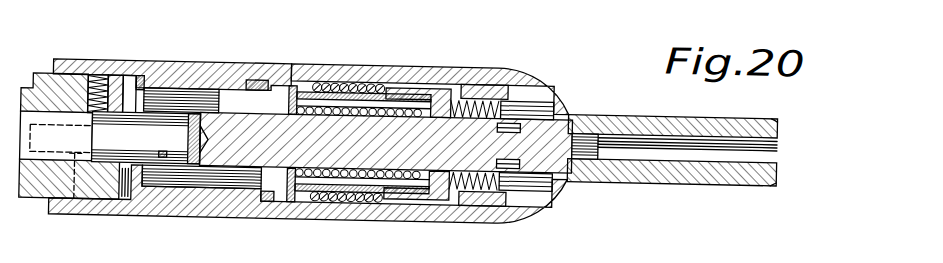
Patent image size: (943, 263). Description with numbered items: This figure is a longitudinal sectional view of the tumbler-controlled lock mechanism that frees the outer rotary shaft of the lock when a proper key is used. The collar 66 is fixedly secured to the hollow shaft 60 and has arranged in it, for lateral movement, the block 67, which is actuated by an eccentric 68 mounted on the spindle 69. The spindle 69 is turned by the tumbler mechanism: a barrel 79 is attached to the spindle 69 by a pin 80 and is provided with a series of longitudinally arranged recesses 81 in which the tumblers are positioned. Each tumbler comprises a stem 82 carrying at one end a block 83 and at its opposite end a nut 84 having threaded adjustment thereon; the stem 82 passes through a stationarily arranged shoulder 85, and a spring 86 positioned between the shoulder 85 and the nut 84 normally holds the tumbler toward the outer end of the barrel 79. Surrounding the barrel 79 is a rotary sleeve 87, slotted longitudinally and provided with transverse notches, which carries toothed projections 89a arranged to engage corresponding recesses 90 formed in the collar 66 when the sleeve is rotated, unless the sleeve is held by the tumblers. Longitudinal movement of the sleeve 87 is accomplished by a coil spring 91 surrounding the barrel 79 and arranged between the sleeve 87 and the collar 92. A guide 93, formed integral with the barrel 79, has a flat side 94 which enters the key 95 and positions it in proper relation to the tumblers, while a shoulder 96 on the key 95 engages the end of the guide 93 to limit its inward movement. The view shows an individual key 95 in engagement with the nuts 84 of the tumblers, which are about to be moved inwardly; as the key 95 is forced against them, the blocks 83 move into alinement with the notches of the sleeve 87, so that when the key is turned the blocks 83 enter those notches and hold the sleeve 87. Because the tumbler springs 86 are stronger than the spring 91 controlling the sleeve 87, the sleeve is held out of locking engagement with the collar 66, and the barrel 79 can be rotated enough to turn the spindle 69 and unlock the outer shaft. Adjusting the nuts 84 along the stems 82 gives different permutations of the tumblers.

The hollow shaft 60 is at (273, 79).
The collar 66 is at (52, 192).
The block 67 is at (56, 135).
The eccentric 68 is at (77, 208).
The spindle 69 is at (146, 138).
The barrel 79 is at (220, 94).
The pin 80 is at (163, 157).
The recesses 81 is at (237, 104).
The stem 82 is at (403, 98).
The block 83 is at (291, 90).
The nut 84 is at (450, 107).
The shoulder 85 is at (302, 88).
The spring 86 is at (368, 82).
The rotary sleeve 87 is at (165, 83).
The toothed projections 89a is at (144, 81).
The recesses 90 is at (128, 83).
The coil spring 91 is at (352, 77).
The collar 92 is at (395, 181).
The guide 93 is at (362, 141).
The flat side 94 is at (570, 110).
The key 95 is at (623, 140).
The shoulder 96 is at (613, 156).